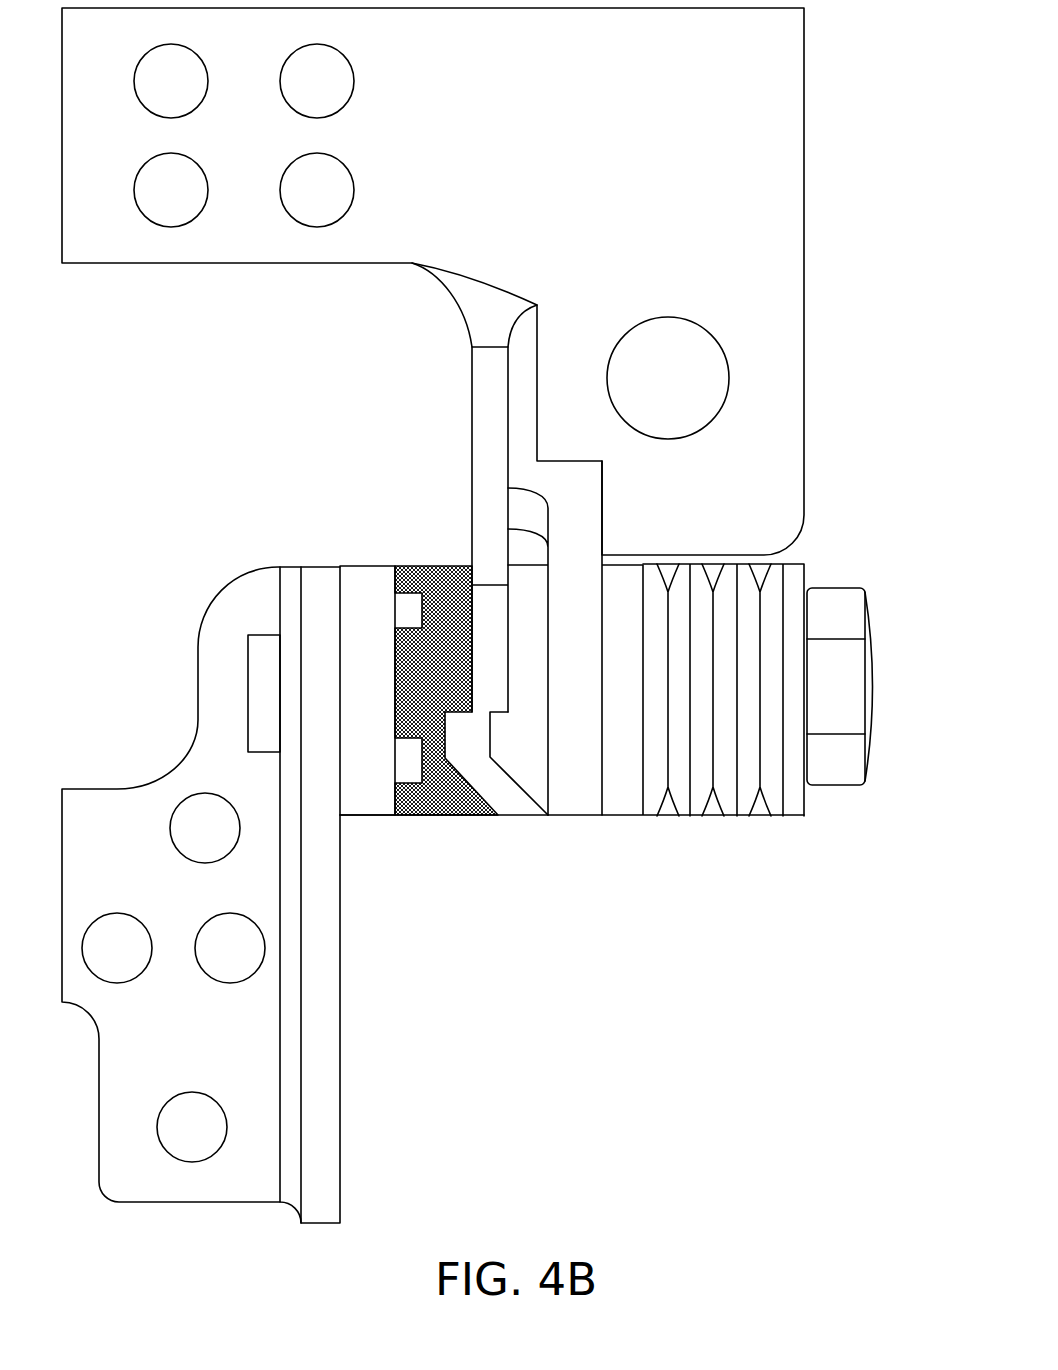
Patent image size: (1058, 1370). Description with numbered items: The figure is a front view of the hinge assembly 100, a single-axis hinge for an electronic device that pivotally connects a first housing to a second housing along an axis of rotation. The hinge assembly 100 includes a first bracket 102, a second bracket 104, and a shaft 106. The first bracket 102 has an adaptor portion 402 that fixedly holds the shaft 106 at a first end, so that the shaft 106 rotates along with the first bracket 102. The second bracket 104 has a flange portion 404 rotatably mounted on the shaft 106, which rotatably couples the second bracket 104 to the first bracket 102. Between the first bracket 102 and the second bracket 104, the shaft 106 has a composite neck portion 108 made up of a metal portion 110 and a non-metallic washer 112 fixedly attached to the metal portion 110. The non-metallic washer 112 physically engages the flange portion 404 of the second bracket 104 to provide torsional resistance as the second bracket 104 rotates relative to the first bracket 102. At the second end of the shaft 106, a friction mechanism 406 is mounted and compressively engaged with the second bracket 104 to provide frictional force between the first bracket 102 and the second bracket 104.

The hinge assembly 100 is at (712, 1208).
The first bracket 102 is at (341, 1020).
The second bracket 104 is at (804, 314).
The shaft 106 is at (248, 683).
The composite neck portion 108 is at (406, 838).
The metal portion 110 is at (367, 570).
The non-metallic washer 112 is at (425, 570).
The adaptor portion 402 is at (318, 577).
The flange portion 404 is at (518, 808).
The friction mechanism 406 is at (802, 833).